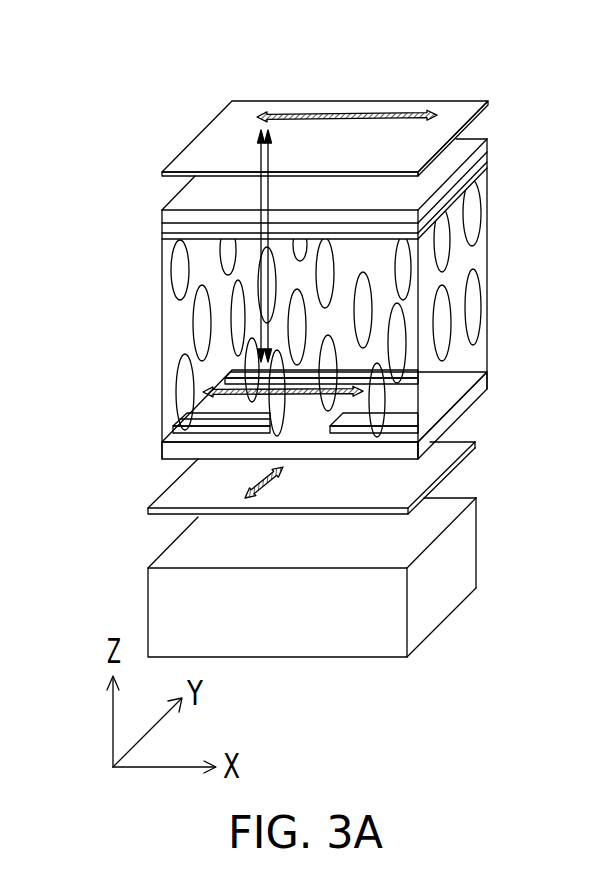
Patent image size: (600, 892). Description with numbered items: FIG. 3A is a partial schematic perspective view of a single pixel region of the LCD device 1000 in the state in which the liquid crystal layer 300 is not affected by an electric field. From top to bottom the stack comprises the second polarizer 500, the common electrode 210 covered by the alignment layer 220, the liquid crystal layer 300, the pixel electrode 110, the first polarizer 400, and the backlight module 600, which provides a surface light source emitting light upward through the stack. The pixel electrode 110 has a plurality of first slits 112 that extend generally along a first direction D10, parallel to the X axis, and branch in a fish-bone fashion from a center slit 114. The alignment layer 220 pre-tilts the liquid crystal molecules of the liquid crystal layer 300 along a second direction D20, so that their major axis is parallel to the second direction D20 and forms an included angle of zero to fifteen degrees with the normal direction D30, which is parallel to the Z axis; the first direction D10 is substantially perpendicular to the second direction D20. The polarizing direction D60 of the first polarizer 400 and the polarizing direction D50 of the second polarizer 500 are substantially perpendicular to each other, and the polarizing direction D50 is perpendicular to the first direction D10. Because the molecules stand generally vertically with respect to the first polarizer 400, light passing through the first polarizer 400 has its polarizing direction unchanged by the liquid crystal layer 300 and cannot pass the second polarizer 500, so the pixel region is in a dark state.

The LCD device 1000 is at (482, 743).
The second polarizer 500 is at (468, 123).
The common electrode 210 is at (488, 160).
The alignment layer 220 is at (487, 177).
The liquid crystal layer 300 is at (478, 260).
The pixel electrode 110 is at (487, 374).
The first slits 112 is at (440, 393).
The center slit 114 is at (307, 420).
The first polarizer 400 is at (427, 472).
The backlight module 600 is at (430, 615).
The first direction D10 is at (238, 395).
The second direction D20 is at (260, 183).
The normal direction D30 is at (268, 160).
The polarizing direction of the second polarizer D50 is at (352, 112).
The polarizing direction of the first polarizer D60 is at (262, 482).